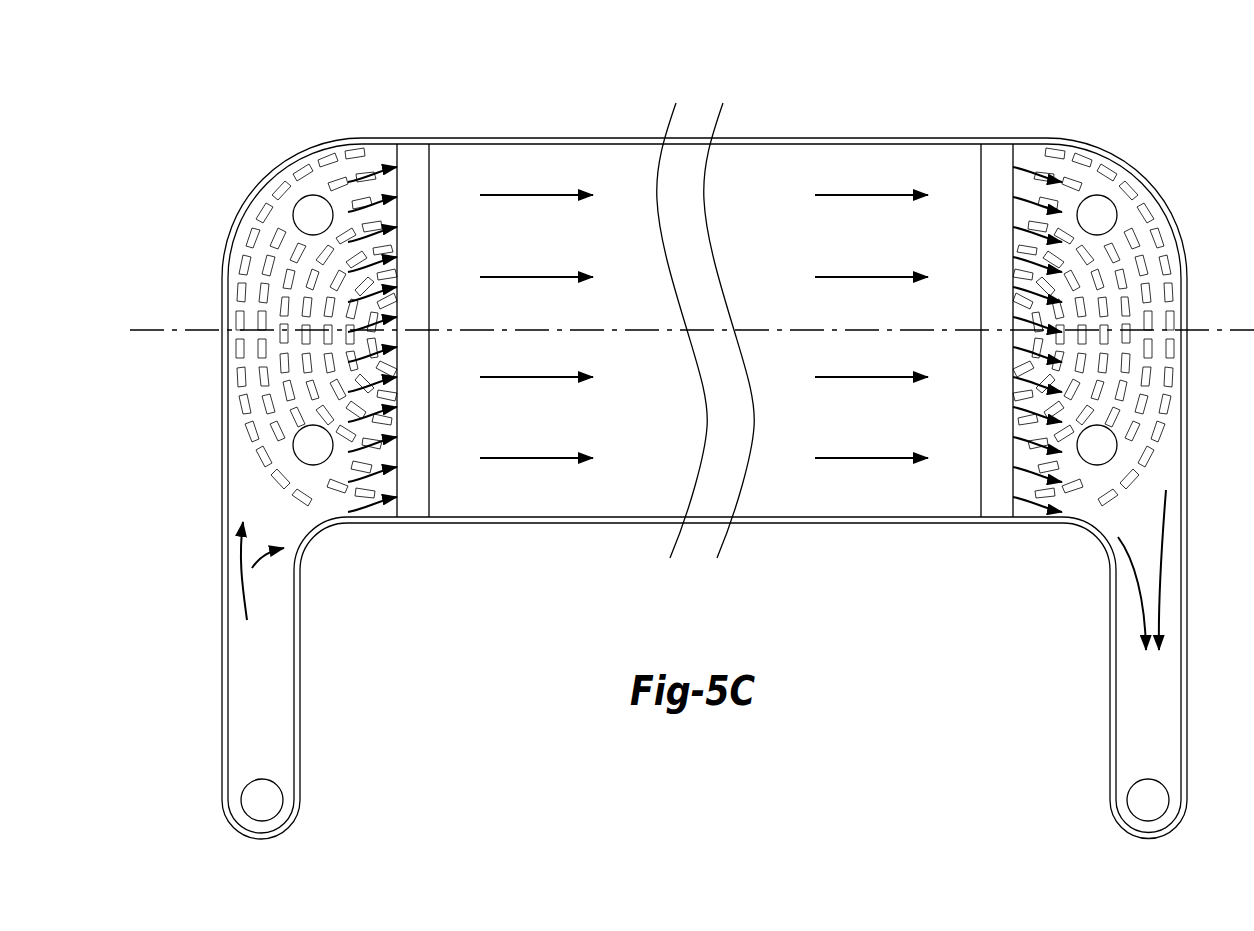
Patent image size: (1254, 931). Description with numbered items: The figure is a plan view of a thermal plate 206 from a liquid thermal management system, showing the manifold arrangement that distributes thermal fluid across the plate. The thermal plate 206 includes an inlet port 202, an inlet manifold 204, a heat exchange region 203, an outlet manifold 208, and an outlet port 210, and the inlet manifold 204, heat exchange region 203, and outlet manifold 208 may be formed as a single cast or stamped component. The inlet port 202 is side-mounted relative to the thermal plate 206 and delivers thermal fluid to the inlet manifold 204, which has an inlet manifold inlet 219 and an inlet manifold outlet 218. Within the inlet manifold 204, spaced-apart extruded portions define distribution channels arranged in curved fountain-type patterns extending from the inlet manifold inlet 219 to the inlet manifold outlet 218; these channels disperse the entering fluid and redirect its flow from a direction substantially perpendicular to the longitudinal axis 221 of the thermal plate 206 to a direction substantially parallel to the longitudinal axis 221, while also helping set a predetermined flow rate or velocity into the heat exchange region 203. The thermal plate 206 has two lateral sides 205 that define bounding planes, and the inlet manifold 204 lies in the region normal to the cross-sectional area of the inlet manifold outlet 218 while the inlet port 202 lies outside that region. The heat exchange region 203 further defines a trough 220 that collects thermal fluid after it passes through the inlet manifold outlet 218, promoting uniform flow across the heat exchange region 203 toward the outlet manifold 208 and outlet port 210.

The inlet port 202 is at (262, 800).
The heat exchange region 203 is at (553, 179).
The inlet manifold 204 is at (281, 247).
The lateral sides 205 is at (866, 138).
The thermal plate 206 is at (962, 96).
The outlet manifold 208 is at (1134, 259).
The outlet port 210 is at (1148, 800).
The inlet manifold outlet 218 is at (400, 437).
The inlet manifold inlet 219 is at (256, 487).
The trough 220 is at (412, 160).
The longitudinal axis 221 is at (178, 325).